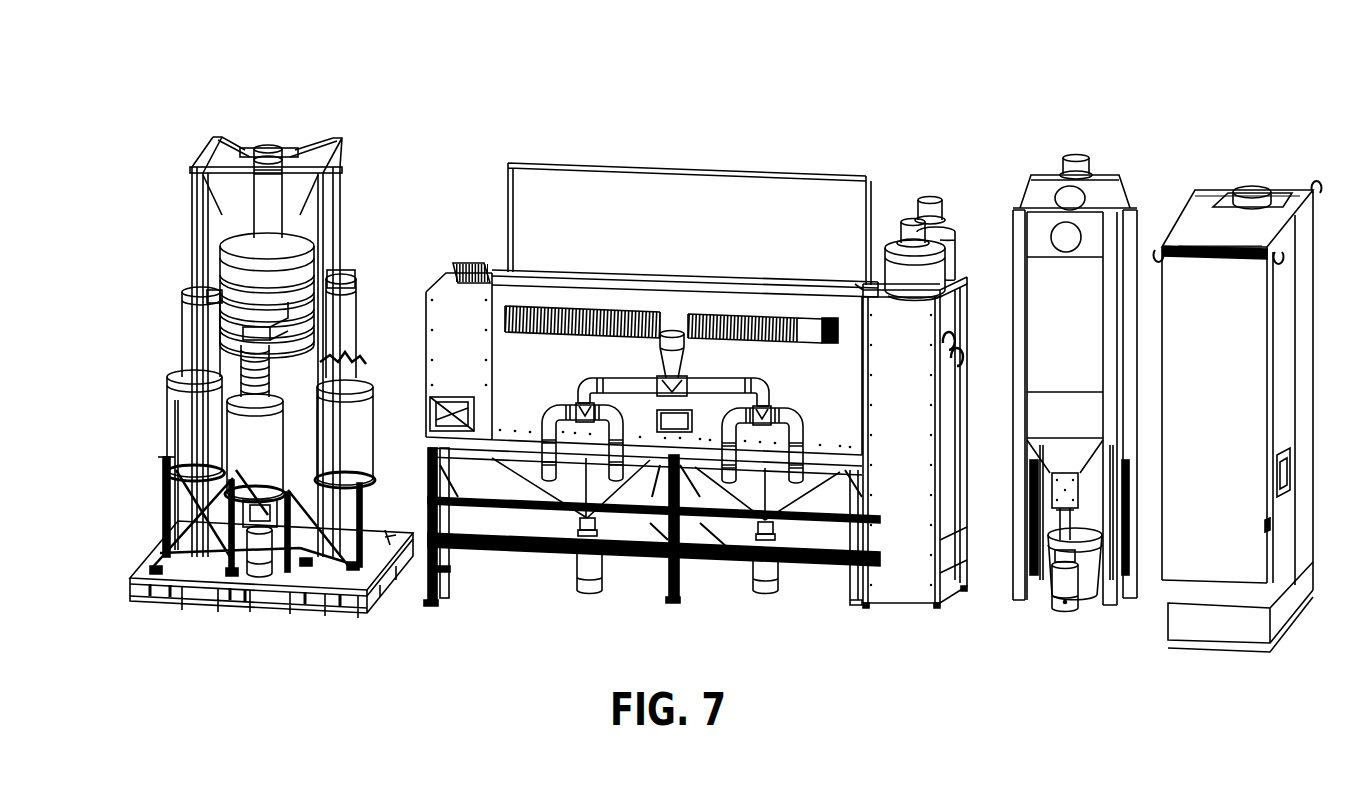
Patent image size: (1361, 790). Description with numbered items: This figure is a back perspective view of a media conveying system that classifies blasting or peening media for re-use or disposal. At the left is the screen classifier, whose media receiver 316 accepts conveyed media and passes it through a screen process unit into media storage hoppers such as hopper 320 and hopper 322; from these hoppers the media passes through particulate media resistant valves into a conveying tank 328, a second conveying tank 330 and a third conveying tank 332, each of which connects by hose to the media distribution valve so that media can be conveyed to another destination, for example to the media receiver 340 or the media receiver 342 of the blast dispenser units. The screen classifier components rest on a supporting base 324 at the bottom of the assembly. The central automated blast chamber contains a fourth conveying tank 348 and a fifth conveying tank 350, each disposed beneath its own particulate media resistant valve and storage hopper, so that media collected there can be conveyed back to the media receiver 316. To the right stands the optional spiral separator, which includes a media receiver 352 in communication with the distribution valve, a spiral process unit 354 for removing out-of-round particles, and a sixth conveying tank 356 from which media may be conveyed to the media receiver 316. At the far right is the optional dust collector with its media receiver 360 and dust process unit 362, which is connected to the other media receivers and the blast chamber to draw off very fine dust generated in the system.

The media receiver 316 is at (270, 147).
The media storage hopper 320 is at (350, 437).
The media storage hopper 322 is at (178, 405).
The pallet 324 is at (202, 560).
The conveying tank 328 is at (353, 573).
The second conveying tank 330 is at (165, 530).
The third conveying tank 332 is at (262, 553).
The media receiver 340 is at (908, 213).
The media receiver 342 is at (927, 205).
The fourth conveying tank 348 is at (765, 592).
The fifth conveying tank 350 is at (590, 582).
The media receiver 352 is at (1075, 157).
The spiral process unit 354 is at (1089, 359).
The sixth conveying tank 356 is at (722, 246).
The media receiver 360 is at (1253, 190).
The dust process unit 362 is at (1244, 426).